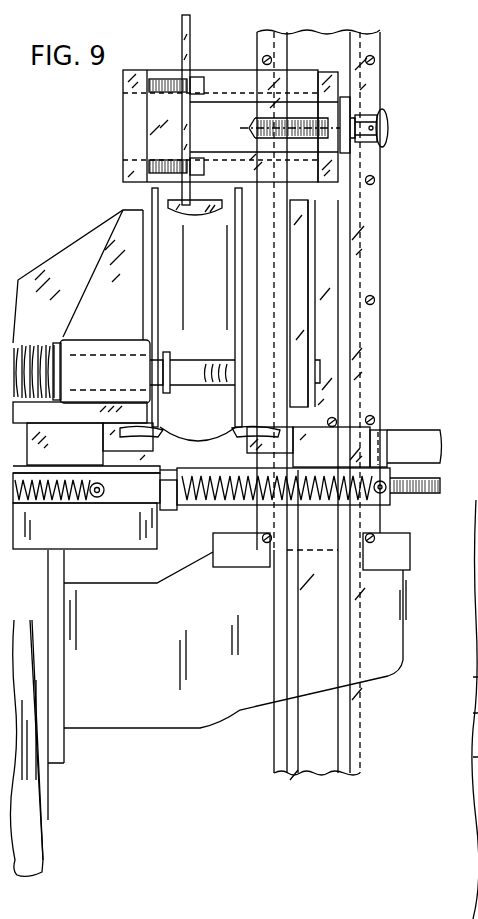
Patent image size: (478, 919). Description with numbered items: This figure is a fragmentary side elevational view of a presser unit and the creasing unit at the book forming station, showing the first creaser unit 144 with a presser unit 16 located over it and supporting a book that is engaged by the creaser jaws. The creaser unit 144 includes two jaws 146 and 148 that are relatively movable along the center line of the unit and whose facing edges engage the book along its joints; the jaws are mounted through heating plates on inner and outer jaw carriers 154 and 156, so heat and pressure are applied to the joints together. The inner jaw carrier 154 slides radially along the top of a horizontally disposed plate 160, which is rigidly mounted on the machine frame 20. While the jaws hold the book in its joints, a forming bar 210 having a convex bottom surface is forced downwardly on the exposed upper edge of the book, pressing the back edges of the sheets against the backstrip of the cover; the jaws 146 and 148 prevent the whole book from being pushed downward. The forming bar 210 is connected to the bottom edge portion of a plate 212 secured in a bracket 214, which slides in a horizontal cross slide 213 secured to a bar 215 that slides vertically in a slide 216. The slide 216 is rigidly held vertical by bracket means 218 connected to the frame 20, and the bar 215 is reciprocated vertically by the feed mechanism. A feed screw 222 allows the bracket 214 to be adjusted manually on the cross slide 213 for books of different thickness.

The presser unit 16 is at (85, 245).
The machine frame 20 is at (35, 844).
The creaser unit 144 is at (226, 513).
The creaser jaw 146 is at (160, 437).
The creaser jaw 148 is at (238, 437).
The inner jaw carrier 154 is at (78, 463).
The outer jaw carrier 156 is at (336, 458).
The plate 160 is at (81, 542).
The forming bar 210 is at (170, 193).
The plate 212 is at (182, 112).
The horizontal cross slide 213 is at (218, 72).
The bracket 214 is at (168, 75).
The bar 215 is at (332, 377).
The slide 216 is at (373, 281).
The bracket means 218 is at (132, 728).
The feed screw 222 is at (330, 139).